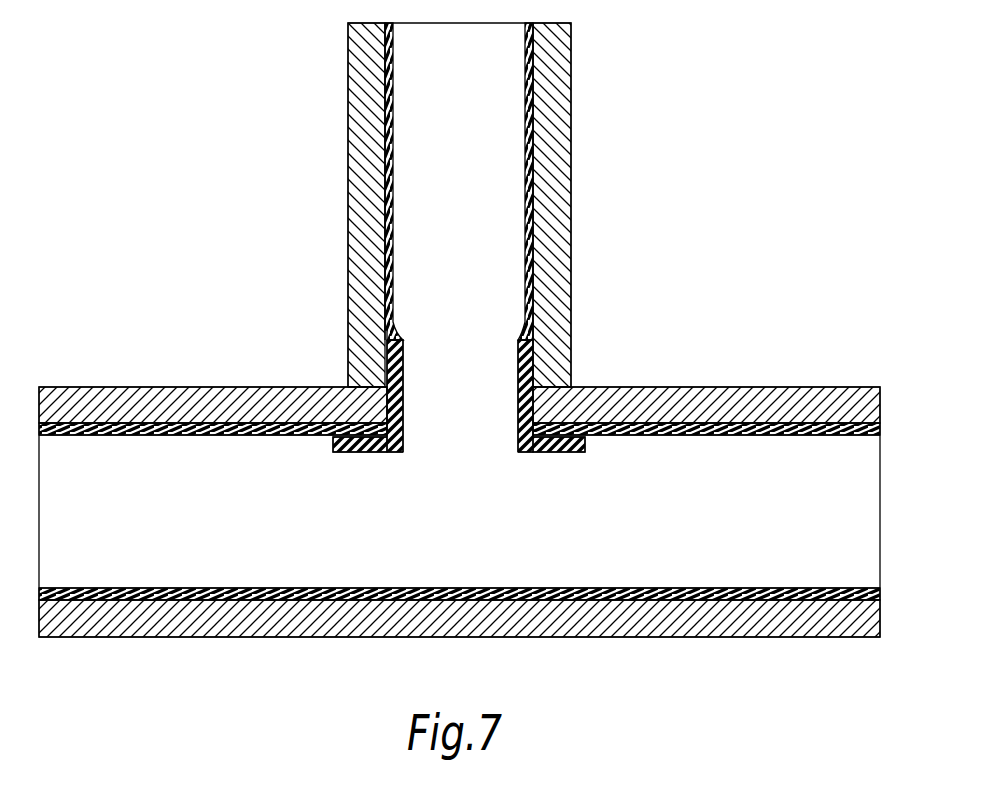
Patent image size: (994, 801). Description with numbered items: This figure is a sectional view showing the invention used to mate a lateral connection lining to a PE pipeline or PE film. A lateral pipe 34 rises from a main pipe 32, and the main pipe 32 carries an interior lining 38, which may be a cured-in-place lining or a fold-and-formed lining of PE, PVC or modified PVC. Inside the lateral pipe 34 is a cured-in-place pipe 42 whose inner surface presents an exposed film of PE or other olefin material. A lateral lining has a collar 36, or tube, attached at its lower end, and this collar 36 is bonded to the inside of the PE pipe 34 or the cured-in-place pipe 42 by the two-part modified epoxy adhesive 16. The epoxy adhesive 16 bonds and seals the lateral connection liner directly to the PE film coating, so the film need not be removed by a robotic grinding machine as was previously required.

The lateral pipe 34 is at (572, 233).
The cured-in-place pipe 42 is at (524, 302).
The main pipe 32 is at (707, 395).
The lining 38 is at (485, 592).
The collar 36 is at (519, 406).
The two-part modified epoxy adhesive 16 is at (333, 441).